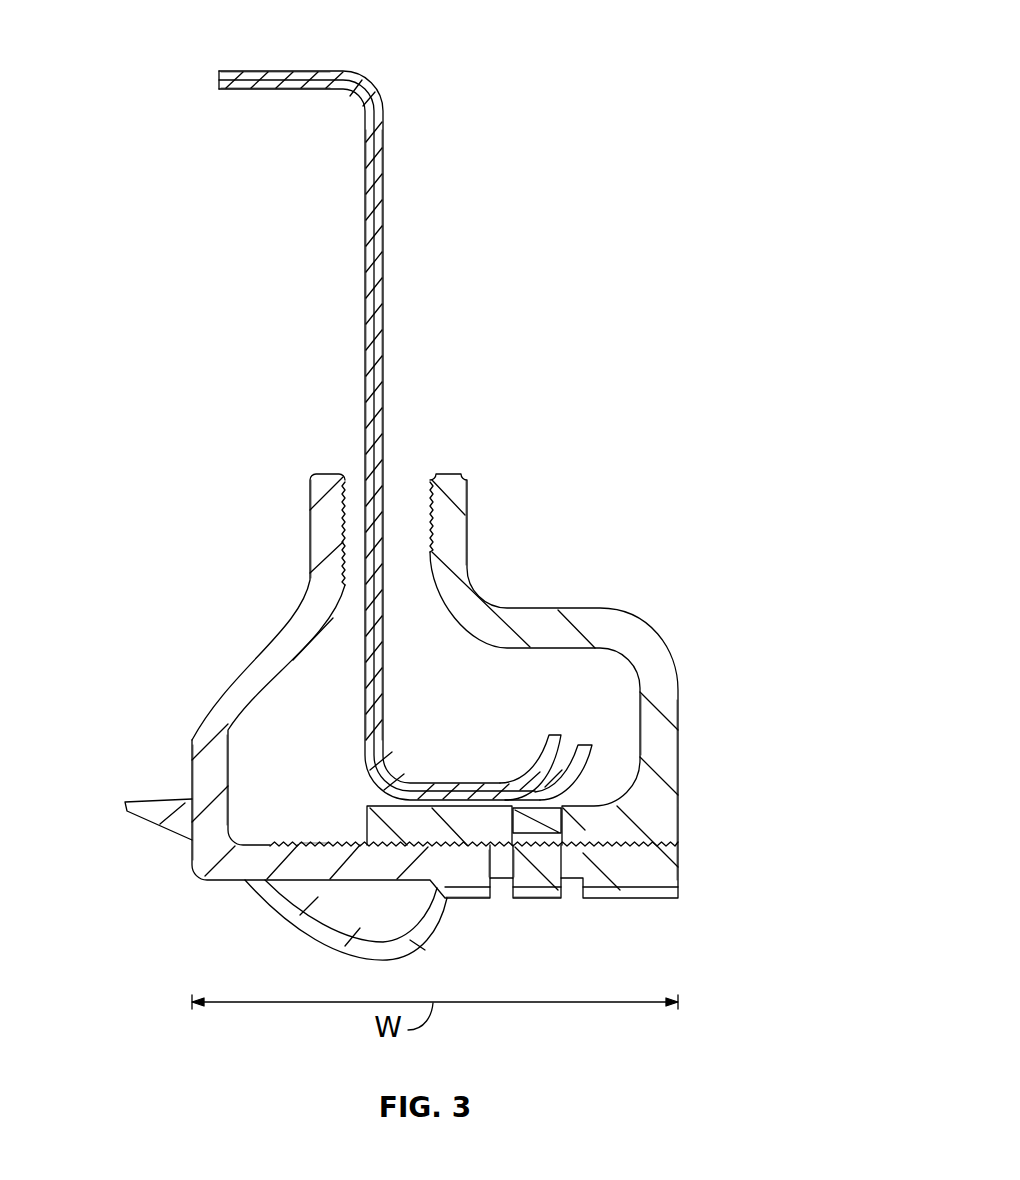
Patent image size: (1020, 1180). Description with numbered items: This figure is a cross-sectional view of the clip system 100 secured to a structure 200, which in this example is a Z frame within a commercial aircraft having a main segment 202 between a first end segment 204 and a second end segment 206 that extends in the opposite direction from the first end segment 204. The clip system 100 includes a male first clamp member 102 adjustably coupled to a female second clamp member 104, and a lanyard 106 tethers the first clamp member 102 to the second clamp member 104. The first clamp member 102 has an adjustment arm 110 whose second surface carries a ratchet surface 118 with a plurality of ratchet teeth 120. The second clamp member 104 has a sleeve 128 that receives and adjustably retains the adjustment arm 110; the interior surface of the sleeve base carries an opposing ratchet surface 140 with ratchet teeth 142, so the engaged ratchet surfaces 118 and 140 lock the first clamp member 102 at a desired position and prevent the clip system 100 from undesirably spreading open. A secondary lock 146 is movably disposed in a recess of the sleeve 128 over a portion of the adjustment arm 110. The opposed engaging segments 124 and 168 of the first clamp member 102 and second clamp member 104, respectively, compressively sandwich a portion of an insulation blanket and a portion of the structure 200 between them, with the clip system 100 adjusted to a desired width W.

The clip system 100 is at (706, 772).
The first clamp member 102 is at (189, 722).
The second clamp member 104 is at (693, 692).
The lanyard 106 is at (164, 831).
The adjustment arm 110 is at (337, 880).
The ratchet surface 118 is at (316, 841).
The ratchet teeth 120 is at (333, 843).
The engaging segment 124 is at (312, 500).
The sleeve 128 is at (468, 900).
The ratchet surface 140 is at (455, 838).
The ratchet teeth 142 is at (435, 843).
The lock 146 is at (535, 900).
The engaging segment 168 is at (469, 525).
The structure 200 is at (387, 215).
The main segment 202 is at (385, 382).
The first end segment 204 is at (262, 71).
The second end segment 206 is at (500, 783).